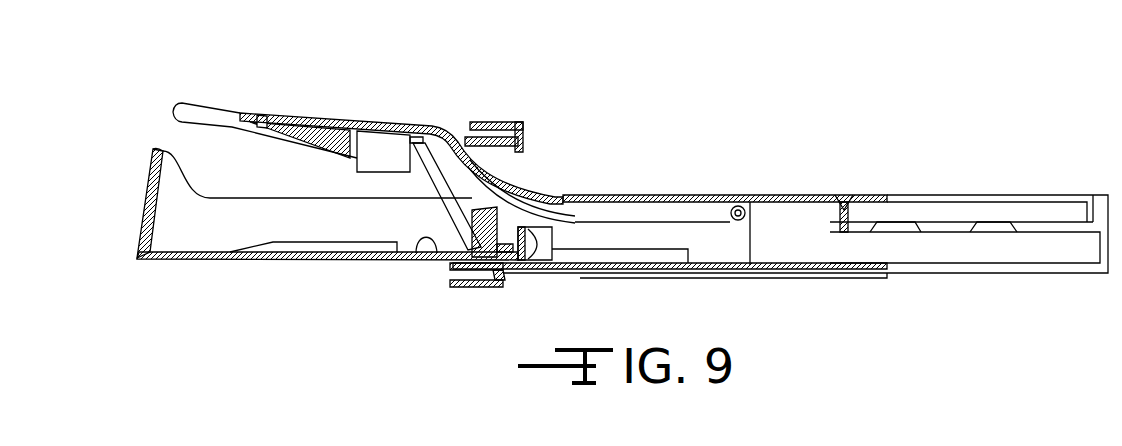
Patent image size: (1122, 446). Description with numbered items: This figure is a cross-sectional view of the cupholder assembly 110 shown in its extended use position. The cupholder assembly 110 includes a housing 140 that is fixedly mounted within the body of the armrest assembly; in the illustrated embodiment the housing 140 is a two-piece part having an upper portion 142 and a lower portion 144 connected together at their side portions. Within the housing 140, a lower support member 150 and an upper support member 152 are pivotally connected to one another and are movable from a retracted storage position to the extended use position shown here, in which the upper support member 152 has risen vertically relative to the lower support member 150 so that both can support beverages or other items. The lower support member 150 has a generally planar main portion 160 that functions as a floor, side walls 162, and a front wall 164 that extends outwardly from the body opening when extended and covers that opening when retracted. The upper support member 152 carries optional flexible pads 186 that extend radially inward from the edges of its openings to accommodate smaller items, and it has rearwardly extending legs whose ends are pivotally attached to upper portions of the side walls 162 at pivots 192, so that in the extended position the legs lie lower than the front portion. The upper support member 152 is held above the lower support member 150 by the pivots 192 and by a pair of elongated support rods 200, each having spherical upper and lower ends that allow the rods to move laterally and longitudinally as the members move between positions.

The cupholder assembly 110 is at (830, 140).
The housing 140 is at (972, 192).
The upper portion 142 is at (680, 194).
The lower portion 144 is at (720, 269).
The lower support member 150 is at (316, 259).
The upper support member 152 is at (397, 118).
The main portion 160 is at (419, 238).
The side walls 162 is at (257, 213).
The front wall 164 is at (150, 193).
The flexible pads 186 is at (346, 115).
The pivots 192 is at (743, 206).
The support rods 200 is at (473, 243).